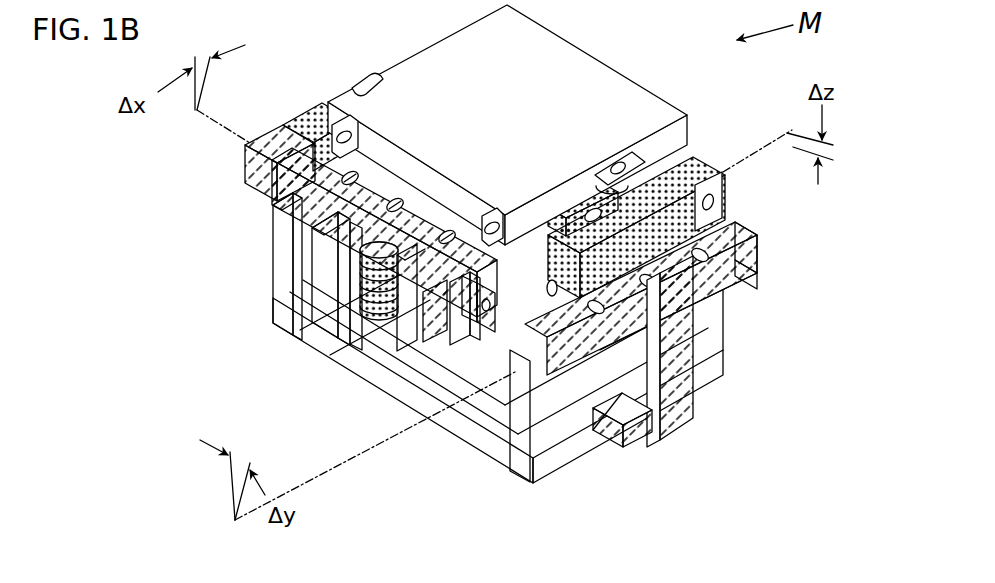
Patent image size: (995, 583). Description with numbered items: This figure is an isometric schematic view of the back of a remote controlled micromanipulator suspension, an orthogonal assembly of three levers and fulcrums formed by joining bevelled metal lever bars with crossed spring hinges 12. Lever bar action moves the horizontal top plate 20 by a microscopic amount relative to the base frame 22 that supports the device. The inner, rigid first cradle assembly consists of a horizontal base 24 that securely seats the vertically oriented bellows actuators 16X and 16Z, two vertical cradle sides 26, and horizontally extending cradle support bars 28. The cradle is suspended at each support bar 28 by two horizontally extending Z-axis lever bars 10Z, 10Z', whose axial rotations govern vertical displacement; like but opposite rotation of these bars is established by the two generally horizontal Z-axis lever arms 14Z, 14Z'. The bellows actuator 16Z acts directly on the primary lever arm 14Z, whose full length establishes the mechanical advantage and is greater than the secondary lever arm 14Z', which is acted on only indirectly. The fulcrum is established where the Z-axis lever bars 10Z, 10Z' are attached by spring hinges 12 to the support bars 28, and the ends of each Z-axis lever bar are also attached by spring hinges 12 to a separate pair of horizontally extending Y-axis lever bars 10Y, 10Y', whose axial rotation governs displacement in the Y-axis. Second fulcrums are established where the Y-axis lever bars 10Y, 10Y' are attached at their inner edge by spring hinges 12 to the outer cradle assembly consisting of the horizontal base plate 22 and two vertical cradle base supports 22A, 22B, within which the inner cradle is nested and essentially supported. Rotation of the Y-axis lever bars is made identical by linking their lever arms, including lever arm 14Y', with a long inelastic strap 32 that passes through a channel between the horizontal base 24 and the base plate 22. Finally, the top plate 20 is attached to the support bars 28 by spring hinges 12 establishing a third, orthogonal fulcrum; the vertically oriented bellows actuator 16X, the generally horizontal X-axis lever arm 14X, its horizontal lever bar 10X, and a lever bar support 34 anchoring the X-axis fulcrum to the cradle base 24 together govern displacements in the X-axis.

The top plate 20 is at (573, 107).
The base frame 22 is at (487, 443).
The vertical cradle base support 22A is at (525, 408).
The vertical cradle base support 22B is at (290, 223).
The horizontal base 24 is at (353, 303).
The vertical cradle side 26 is at (335, 268).
The cradle support bar 28 is at (330, 232).
The inelastic strap 32 is at (597, 440).
The lever bar support 34 is at (370, 322).
The X-axis lever bar 10X is at (325, 188).
The Y-axis lever bar 10Y is at (217, 163).
The Z-axis lever bar 10Z is at (299, 115).
The Y-axis lever bar 10Y' is at (689, 298).
The Z-axis lever bar 10Z' is at (777, 206).
The crossed spring hinge 12 is at (742, 278).
The X-axis lever arm 14X is at (407, 322).
The Y-axis lever arm 14Y' is at (735, 351).
The primary vertical lever arm 14Z is at (347, 48).
The secondary vertical lever arm 14Z' is at (647, 112).
The X-axis bellows actuator 16X is at (640, 152).
The Z-axis bellows actuator 16Z is at (345, 290).